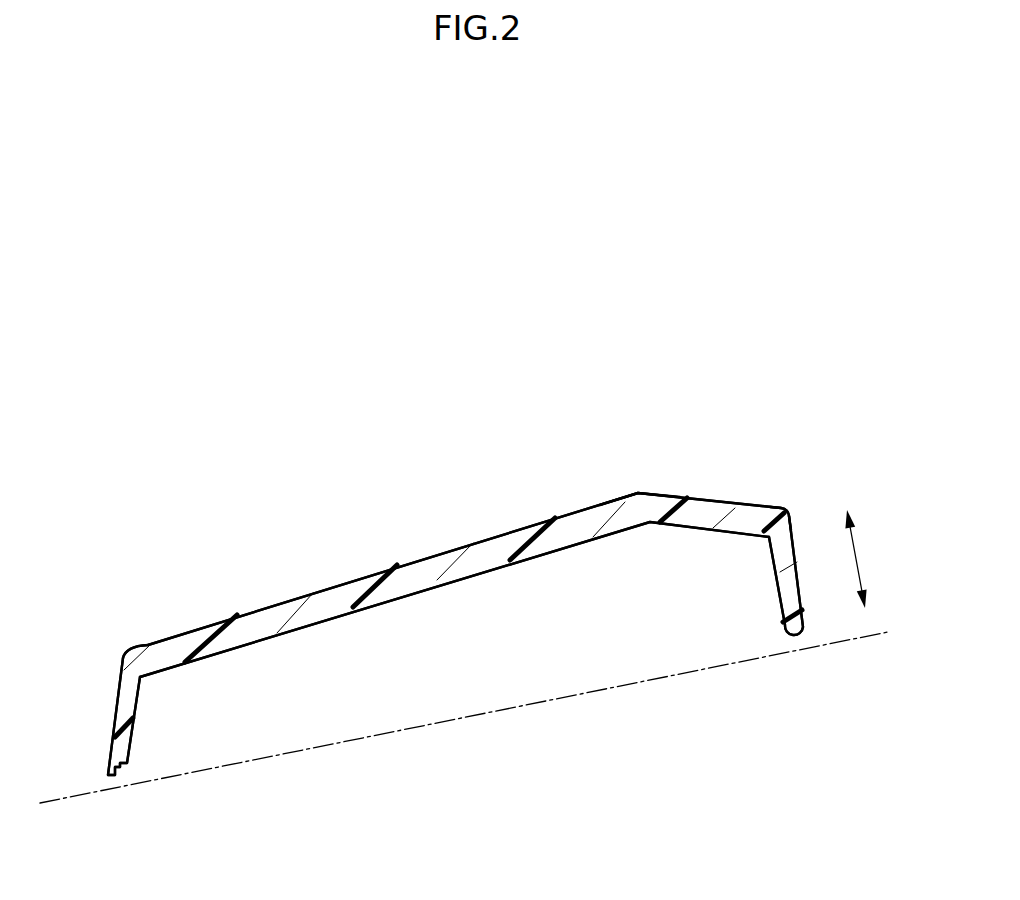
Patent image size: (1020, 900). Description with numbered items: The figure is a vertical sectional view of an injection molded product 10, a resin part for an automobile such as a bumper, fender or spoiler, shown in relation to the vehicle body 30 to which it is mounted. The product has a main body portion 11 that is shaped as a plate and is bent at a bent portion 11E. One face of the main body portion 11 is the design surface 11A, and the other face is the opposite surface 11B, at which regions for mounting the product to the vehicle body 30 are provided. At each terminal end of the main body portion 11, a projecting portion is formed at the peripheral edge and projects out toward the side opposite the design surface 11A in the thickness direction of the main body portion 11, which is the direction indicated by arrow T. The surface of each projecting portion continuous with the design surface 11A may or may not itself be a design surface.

The injection molded product 10 is at (690, 398).
The main body portion 11 is at (556, 512).
The design surface 11A is at (393, 568).
The opposite surface 11B is at (400, 597).
The bent portion 11E is at (650, 493).
The vehicle body 30 is at (62, 800).
The thickness direction T is at (858, 557).